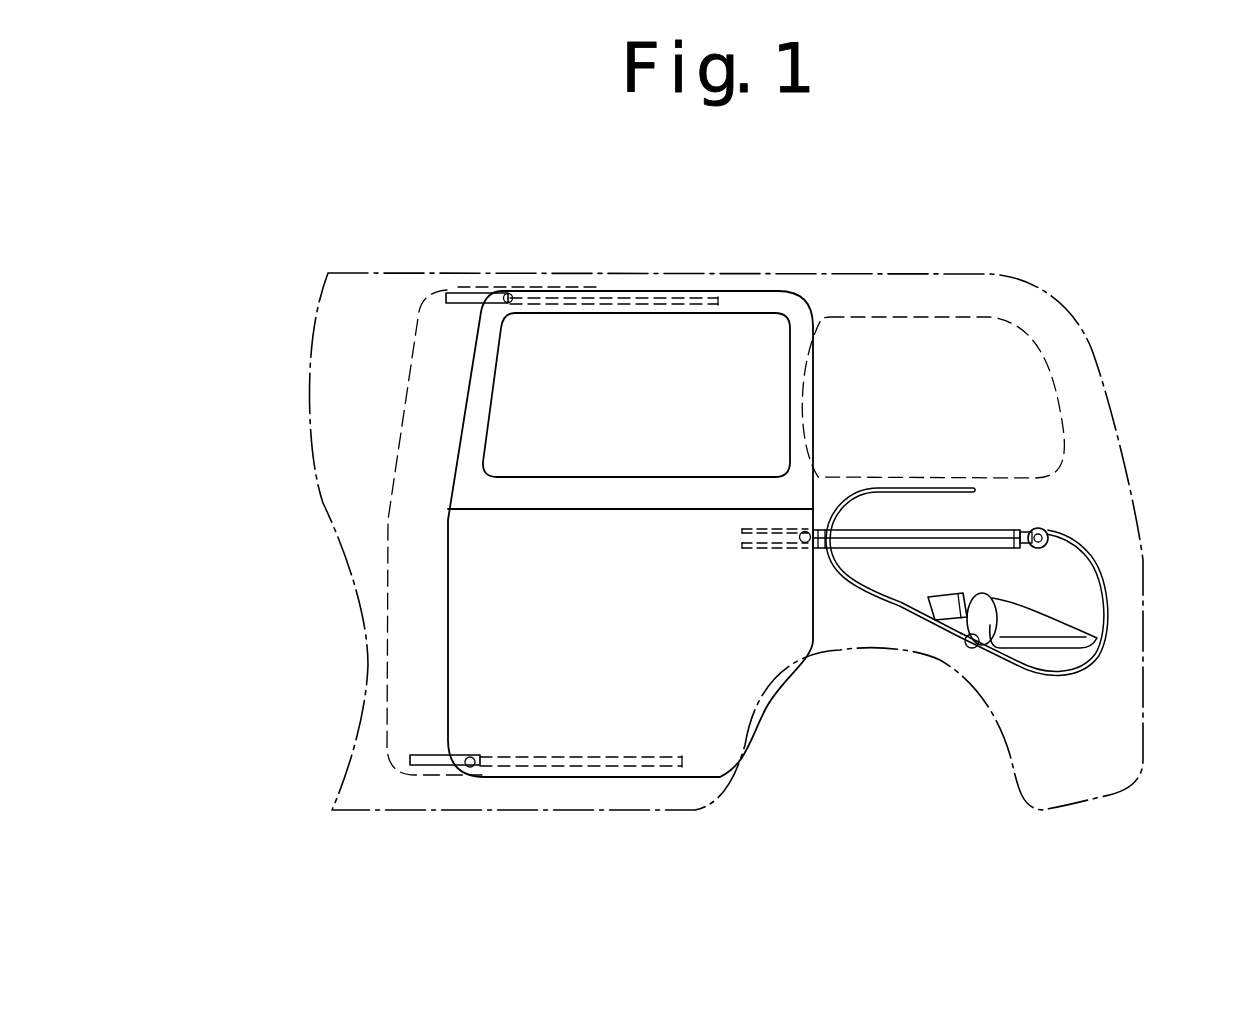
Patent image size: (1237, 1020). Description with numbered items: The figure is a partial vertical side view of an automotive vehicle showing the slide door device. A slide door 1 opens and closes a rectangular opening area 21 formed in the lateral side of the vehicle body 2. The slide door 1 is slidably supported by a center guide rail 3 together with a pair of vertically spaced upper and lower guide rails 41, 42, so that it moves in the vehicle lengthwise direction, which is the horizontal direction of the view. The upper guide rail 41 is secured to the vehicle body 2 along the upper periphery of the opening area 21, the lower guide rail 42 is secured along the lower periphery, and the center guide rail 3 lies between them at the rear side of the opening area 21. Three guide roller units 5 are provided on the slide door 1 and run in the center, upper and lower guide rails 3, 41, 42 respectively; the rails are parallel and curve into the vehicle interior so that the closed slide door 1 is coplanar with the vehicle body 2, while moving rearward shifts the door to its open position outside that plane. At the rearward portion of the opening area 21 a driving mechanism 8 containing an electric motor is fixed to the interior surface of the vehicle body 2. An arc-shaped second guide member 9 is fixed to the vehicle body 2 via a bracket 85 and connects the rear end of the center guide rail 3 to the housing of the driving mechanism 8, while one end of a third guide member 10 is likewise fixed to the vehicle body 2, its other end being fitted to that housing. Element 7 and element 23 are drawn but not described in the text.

The slide door 1 is at (710, 745).
The vehicle body 2 is at (1067, 352).
The center guide rail 3 is at (878, 548).
The guide roller unit 5 is at (508, 293).
The rail end bracket 7 is at (997, 528).
The driving mechanism 8 is at (958, 650).
The second guide member 9 is at (1070, 668).
The third guide member 10 is at (912, 490).
The opening area 21 is at (388, 522).
The pulley 23 is at (1044, 529).
The upper guide rail 41 is at (454, 296).
The lower guide rail 42 is at (428, 762).
The bracket 85 is at (1030, 630).